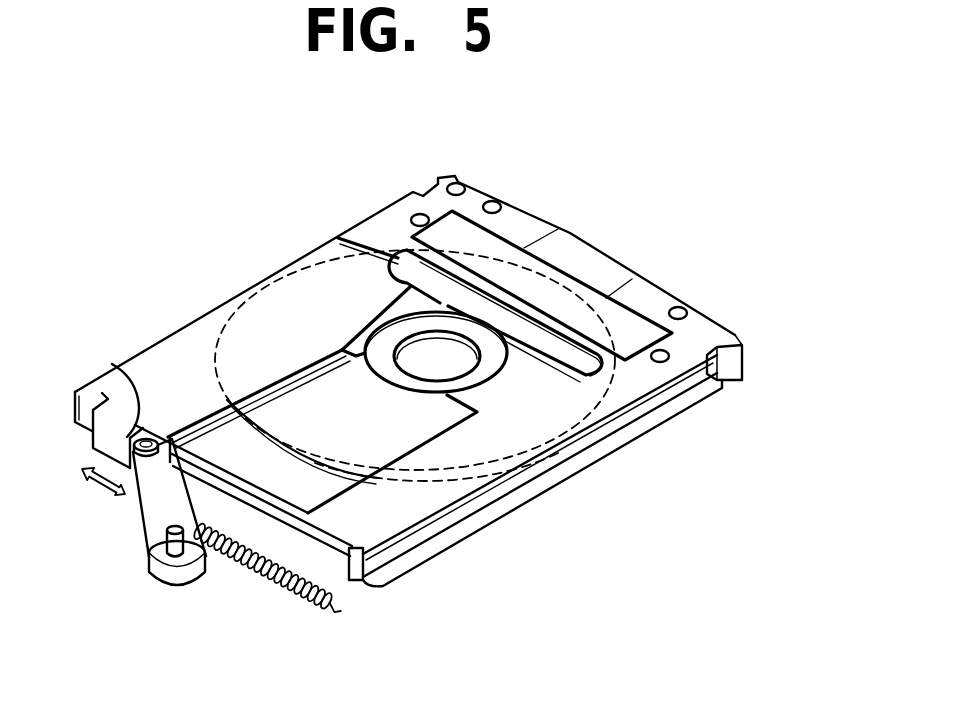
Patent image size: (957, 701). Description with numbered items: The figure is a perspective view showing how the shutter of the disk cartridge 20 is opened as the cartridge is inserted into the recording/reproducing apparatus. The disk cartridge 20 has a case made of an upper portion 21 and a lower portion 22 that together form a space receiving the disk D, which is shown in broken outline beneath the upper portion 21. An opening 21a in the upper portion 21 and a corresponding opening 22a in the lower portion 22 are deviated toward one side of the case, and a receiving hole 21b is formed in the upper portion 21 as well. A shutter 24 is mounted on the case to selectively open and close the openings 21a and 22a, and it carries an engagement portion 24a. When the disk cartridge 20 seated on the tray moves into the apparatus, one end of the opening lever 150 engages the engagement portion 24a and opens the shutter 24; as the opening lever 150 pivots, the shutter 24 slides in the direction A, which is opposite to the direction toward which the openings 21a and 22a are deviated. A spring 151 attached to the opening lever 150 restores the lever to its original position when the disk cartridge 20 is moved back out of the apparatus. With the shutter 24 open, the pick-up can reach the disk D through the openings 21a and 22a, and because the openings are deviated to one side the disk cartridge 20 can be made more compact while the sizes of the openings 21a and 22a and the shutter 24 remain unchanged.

The disk cartridge 20 is at (729, 469).
The upper portion 21 is at (660, 399).
The opening 21a is at (308, 432).
The receiving hole 21b is at (420, 298).
The lower portion 22 is at (642, 425).
The opening 22a is at (271, 351).
The shutter 24 is at (85, 438).
The engagement portion 24a is at (125, 382).
The opening lever 150 is at (150, 533).
The spring 151 is at (255, 575).
The direction of lever movement A is at (103, 492).
The disk D is at (407, 503).